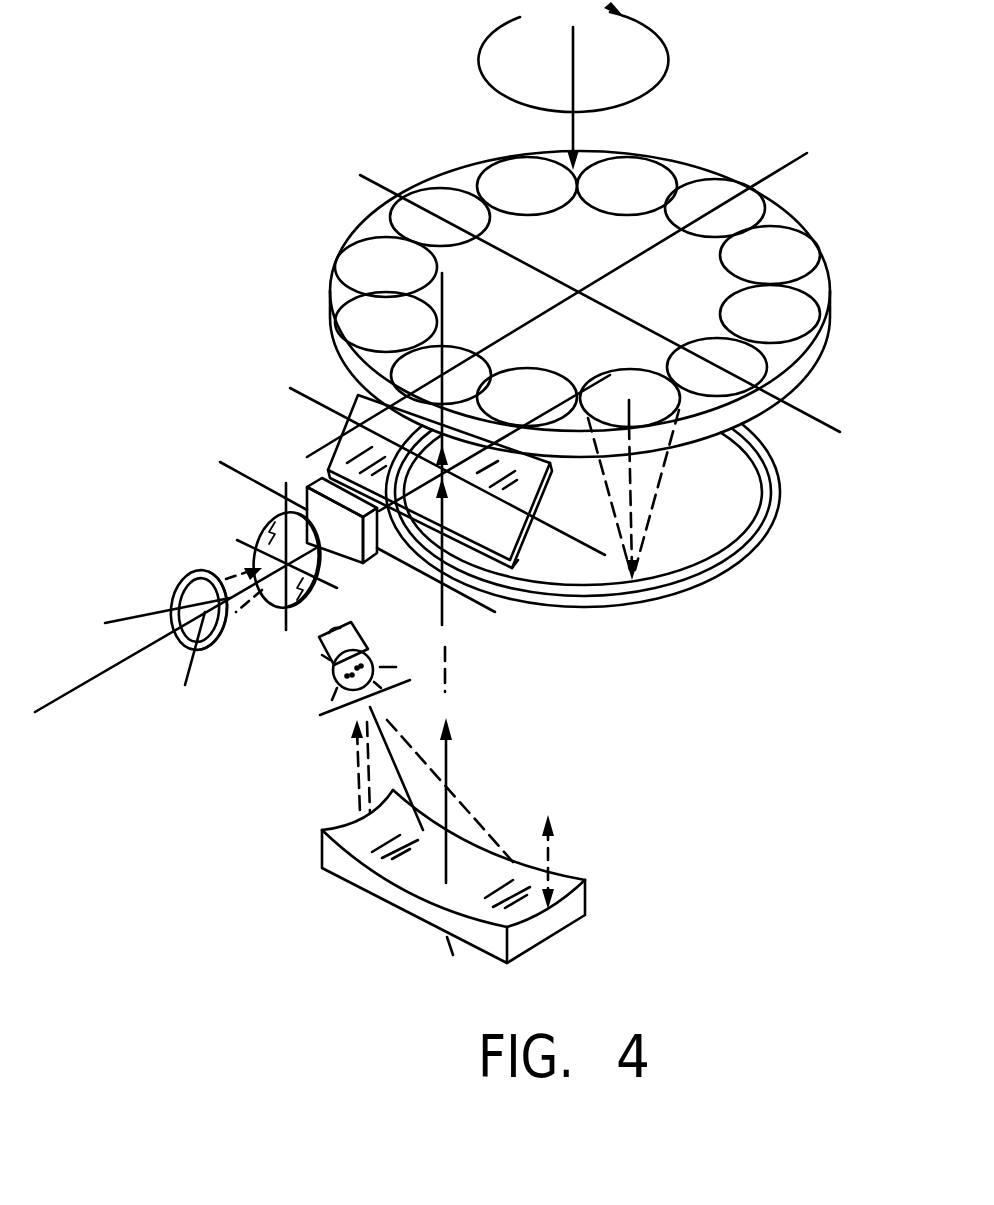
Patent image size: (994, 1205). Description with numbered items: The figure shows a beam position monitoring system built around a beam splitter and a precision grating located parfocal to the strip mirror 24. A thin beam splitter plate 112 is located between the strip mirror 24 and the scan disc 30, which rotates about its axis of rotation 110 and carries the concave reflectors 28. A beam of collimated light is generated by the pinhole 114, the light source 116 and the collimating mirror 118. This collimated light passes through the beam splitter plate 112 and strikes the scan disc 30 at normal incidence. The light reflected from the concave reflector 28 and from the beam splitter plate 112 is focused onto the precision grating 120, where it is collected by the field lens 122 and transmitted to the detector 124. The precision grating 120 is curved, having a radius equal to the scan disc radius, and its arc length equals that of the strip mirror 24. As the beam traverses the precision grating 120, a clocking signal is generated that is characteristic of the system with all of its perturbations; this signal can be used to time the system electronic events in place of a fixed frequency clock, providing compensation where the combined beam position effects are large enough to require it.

The axis of rotation 110 is at (574, 45).
The scan disc 30 is at (838, 262).
The concave reflector 28 is at (472, 360).
The strip mirror 24 is at (745, 545).
The beam splitter plate 112 is at (352, 398).
The precision grating 120 is at (312, 482).
The field lens 122 is at (268, 516).
The detector 124 is at (186, 584).
The light source 116 is at (331, 668).
The pinhole 114 is at (400, 680).
The collimating mirror 118 is at (588, 888).